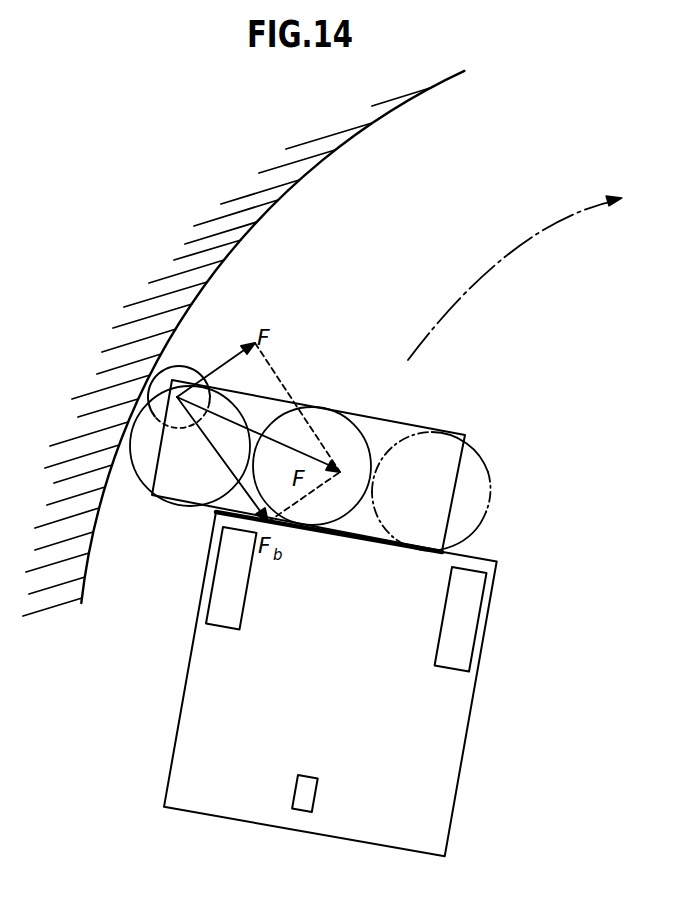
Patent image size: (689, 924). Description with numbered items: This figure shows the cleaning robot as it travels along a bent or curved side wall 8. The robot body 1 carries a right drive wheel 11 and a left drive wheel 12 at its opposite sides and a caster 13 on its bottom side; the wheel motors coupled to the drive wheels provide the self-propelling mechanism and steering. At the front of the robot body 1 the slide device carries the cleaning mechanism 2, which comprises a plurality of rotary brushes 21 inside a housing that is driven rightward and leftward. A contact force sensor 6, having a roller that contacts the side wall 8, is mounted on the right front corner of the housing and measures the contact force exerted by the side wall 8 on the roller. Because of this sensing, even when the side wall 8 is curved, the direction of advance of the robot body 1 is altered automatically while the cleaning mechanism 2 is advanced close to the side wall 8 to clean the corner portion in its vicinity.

The robot body 1 is at (462, 768).
The cleaning mechanism 2 is at (407, 420).
The contact force sensor 6 is at (182, 363).
The side wall 8 is at (331, 146).
The right drive wheel 11 is at (223, 585).
The left drive wheel 12 is at (463, 617).
The caster 13 is at (305, 793).
The rotary brushes 21 is at (493, 470).